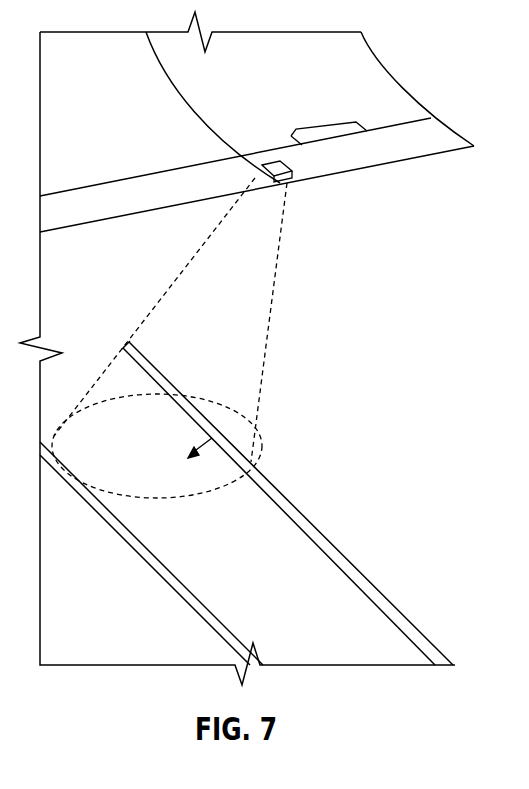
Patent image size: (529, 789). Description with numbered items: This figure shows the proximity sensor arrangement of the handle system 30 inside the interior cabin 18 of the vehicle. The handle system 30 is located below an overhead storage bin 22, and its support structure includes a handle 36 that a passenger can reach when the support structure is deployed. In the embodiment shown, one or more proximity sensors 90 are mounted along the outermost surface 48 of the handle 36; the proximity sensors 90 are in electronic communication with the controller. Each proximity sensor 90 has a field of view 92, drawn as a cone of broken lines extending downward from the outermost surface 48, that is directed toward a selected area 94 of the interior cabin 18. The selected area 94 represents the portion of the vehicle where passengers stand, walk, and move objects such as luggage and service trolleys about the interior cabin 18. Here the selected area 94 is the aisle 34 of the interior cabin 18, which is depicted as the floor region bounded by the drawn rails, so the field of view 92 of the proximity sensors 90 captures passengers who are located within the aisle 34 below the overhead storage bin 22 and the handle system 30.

The interior cabin 18 is at (397, 215).
The overhead storage bin 22 is at (309, 95).
The handle system 30 is at (438, 142).
The aisle 34 is at (276, 552).
The handle 36 is at (388, 143).
The outermost surface 48 is at (367, 166).
The proximity sensor 90 is at (274, 164).
The field of view 92 is at (308, 314).
The selected area 94 is at (236, 418).